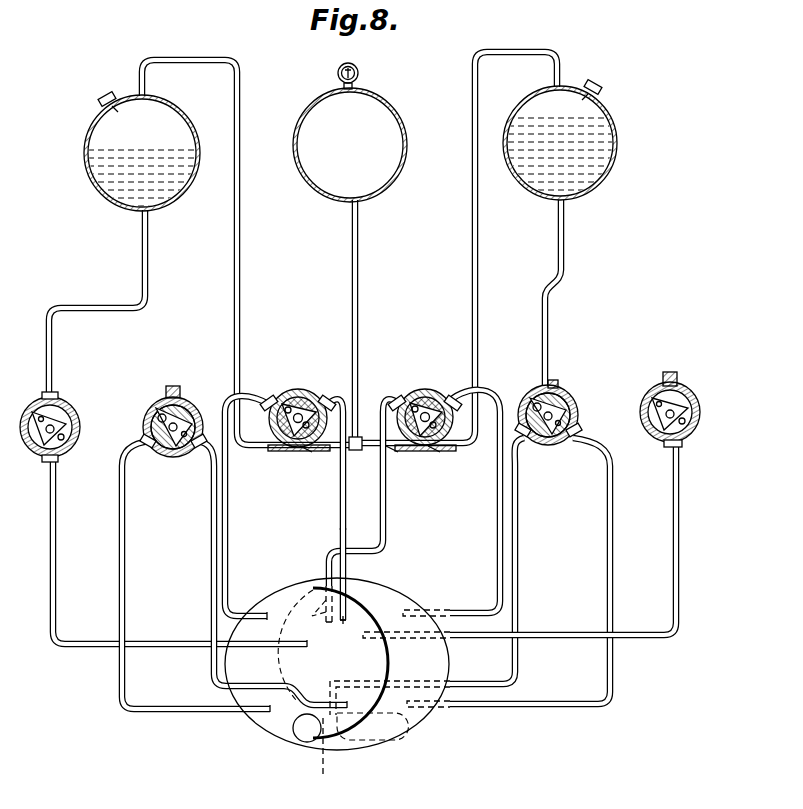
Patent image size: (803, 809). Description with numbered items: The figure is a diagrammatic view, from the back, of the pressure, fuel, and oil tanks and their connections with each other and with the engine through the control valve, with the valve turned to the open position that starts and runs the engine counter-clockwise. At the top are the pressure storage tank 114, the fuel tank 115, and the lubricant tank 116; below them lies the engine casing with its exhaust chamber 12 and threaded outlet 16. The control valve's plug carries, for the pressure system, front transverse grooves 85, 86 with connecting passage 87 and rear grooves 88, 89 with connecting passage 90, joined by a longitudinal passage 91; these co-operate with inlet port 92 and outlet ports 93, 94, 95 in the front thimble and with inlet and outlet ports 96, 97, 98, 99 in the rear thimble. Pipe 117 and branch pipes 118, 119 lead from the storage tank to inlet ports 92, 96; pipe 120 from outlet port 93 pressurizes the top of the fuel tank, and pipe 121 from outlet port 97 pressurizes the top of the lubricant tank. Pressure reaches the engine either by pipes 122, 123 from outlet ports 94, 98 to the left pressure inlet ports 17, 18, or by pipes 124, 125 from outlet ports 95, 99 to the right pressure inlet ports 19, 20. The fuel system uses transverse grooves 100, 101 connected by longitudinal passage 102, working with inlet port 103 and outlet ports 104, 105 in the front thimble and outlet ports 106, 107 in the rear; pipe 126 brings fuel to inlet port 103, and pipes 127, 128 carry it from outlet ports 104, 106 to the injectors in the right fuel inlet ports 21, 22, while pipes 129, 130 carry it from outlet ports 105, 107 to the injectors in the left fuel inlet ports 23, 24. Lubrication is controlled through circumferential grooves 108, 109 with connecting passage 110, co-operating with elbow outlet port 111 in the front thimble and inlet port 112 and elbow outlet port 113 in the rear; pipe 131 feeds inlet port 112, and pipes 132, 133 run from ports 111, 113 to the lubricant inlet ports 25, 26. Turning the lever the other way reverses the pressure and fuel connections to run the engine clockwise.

The chamber 12 is at (400, 742).
The circular threaded outlet 16 is at (300, 745).
The left pressure inlet port 17 is at (408, 612).
The left pressure inlet port 18 is at (348, 620).
The right pressure inlet port 19 is at (322, 591).
The right pressure inlet port 20 is at (263, 614).
The right fuel inlet port 21 is at (326, 756).
The right fuel inlet port 22 is at (265, 713).
The left fuel inlet port 23 is at (418, 718).
The left fuel inlet port 24 is at (348, 708).
The lubricant inlet port 25 is at (363, 646).
The lubricant inlet port 26 is at (305, 650).
The transverse groove 85 is at (430, 453).
The transverse groove 86 is at (434, 398).
The connecting passage 87 is at (414, 398).
The transverse groove 88 is at (291, 430).
The transverse groove 89 is at (304, 400).
The connecting passage 90 is at (289, 402).
The longitudinal passage 91 is at (296, 428).
The inlet port 92 is at (422, 418).
The outlet port 93 is at (440, 452).
The outlet port 94 is at (452, 398).
The outlet port 95 is at (396, 398).
The inlet port 96 is at (306, 452).
The outlet port 97 is at (275, 453).
The outlet port 98 is at (324, 398).
The outlet port 99 is at (270, 397).
The transverse groove 100 is at (567, 409).
The transverse groove 101 is at (178, 425).
The longitudinal passage 102 is at (160, 416).
The inlet port 103 is at (553, 383).
The outlet port 104 is at (522, 440).
The outlet port 105 is at (578, 428).
The outlet port 106 is at (147, 450).
The outlet port 107 is at (199, 450).
The circumferential groove 108 is at (683, 412).
The circumferential groove 109 is at (55, 431).
The longitudinal passage 110 is at (64, 436).
The elbow outlet port 111 is at (683, 446).
The inlet port 112 is at (45, 394).
The elbow outlet port 113 is at (45, 462).
The pressure storage tank 114 is at (388, 153).
The fuel tank 115 is at (590, 110).
The lubricant tank 116 is at (166, 136).
The pipe 117 is at (360, 288).
The branch pipe 118 is at (388, 453).
The branch pipe 119 is at (342, 470).
The pipe 120 is at (479, 272).
The pipe 121 is at (243, 274).
The pipe 122 is at (497, 523).
The pipe 123 is at (346, 538).
The pipe 124 is at (386, 527).
The pipe 125 is at (229, 524).
The pipe 126 is at (566, 292).
The pipe 127 is at (518, 562).
The pipe 128 is at (126, 551).
The pipe 129 is at (612, 550).
The pipe 130 is at (213, 560).
The pipe 131 is at (150, 284).
The pipe 132 is at (678, 532).
The pipe 133 is at (57, 551).